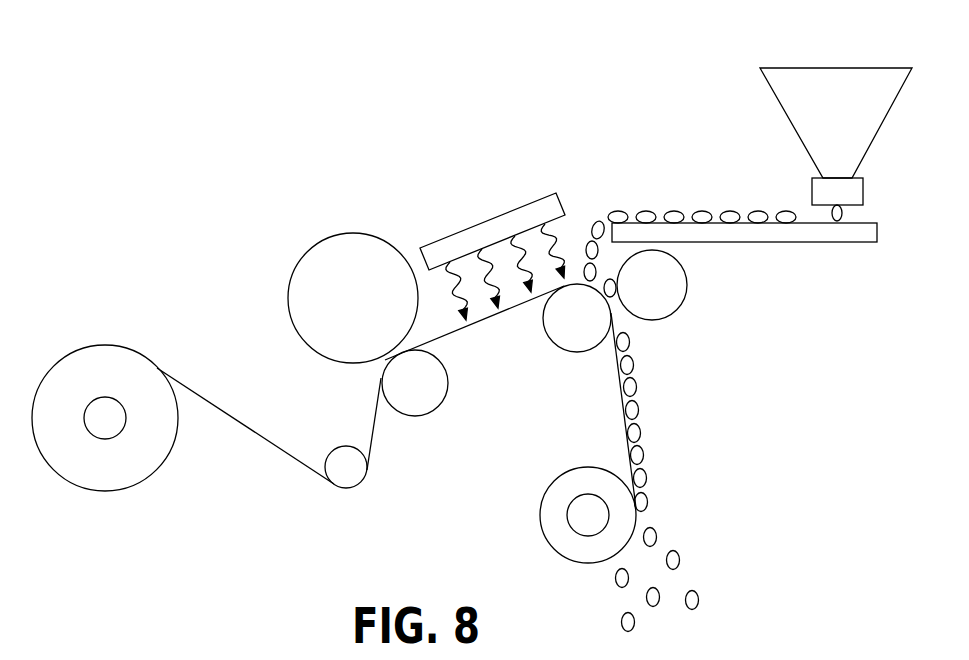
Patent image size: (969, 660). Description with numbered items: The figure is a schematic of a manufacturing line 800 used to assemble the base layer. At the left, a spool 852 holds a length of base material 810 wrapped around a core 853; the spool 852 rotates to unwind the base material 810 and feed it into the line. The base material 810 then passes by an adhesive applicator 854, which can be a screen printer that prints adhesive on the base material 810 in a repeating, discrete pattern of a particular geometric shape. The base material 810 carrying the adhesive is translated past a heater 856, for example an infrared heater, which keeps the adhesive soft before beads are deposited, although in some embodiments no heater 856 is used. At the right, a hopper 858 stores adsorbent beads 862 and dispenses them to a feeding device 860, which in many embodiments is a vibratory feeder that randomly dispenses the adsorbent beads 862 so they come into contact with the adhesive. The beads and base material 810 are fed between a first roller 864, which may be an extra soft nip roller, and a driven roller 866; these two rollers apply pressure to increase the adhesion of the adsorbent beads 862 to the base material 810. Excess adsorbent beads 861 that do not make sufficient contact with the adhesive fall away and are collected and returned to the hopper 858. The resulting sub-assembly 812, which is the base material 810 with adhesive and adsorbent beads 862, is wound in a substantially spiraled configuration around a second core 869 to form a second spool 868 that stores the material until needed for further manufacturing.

The manufacturing line 800 is at (277, 80).
The spool 852 is at (50, 398).
The core 853 is at (104, 428).
The base material 810 is at (248, 432).
The adhesive applicator 854 is at (307, 277).
The heater 856 is at (468, 242).
The driven roller 866 is at (562, 326).
The first roller 864 is at (672, 297).
The feeding device 860 is at (812, 232).
The adsorbent beads 862 is at (702, 211).
The hopper 858 is at (872, 113).
The sub-assembly 812 is at (655, 430).
The second spool 868 is at (577, 487).
The second core 869 is at (575, 513).
The excess adsorbent beads 861 is at (707, 570).